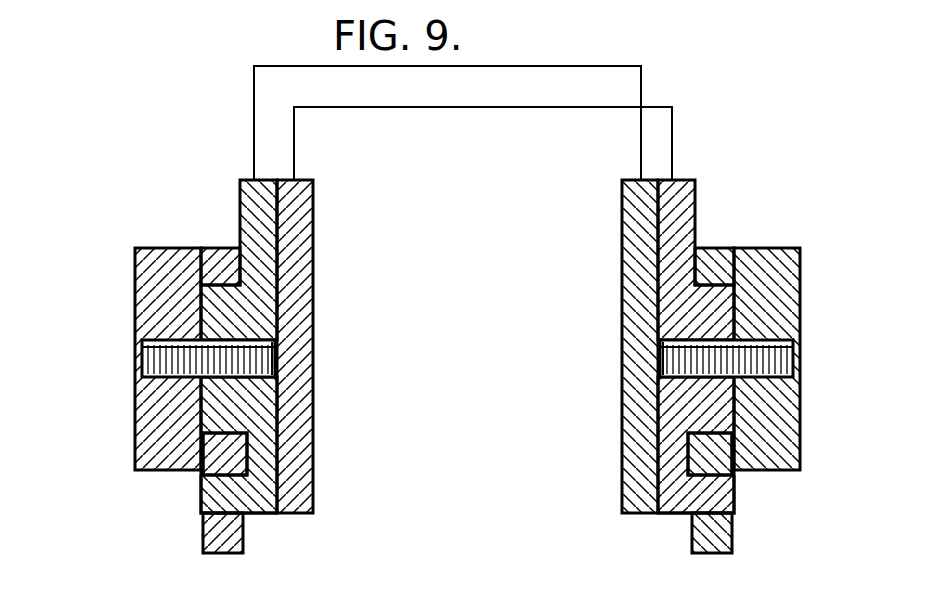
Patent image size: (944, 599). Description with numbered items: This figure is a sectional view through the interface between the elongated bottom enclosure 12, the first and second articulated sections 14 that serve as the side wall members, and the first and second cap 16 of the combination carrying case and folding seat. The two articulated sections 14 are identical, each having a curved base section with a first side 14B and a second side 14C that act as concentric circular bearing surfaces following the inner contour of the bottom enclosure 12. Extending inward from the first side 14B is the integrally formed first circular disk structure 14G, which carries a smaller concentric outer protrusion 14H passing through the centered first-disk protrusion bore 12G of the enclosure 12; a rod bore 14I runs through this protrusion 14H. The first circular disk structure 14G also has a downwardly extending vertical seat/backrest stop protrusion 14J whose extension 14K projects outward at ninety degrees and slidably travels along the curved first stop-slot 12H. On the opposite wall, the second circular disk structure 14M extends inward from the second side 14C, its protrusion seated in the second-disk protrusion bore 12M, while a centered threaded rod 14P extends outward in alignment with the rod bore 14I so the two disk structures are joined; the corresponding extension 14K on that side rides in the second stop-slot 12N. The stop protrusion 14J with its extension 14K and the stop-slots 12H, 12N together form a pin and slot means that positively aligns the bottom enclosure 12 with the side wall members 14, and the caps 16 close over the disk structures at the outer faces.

The elongated bottom enclosure 12 is at (210, 247).
The first-disk protrusion bore 12G is at (165, 297).
The first stop-slot 12H is at (205, 512).
The second-disk protrusion bore 12M is at (785, 293).
The second stop-slot 12N is at (733, 515).
The articulated section 14 is at (545, 66).
The first side 14B is at (247, 200).
The second side 14C is at (623, 207).
The first circular disk structure 14G is at (688, 200).
The second circular disk structure 14M is at (313, 207).
The concentric outer protrusion 14H is at (140, 350).
The rod bore 14I is at (272, 358).
The seat/backrest stop protrusion 14J is at (203, 488).
The extension 14K is at (732, 487).
The threaded rod 14P is at (165, 403).
The cap 16 is at (142, 267).